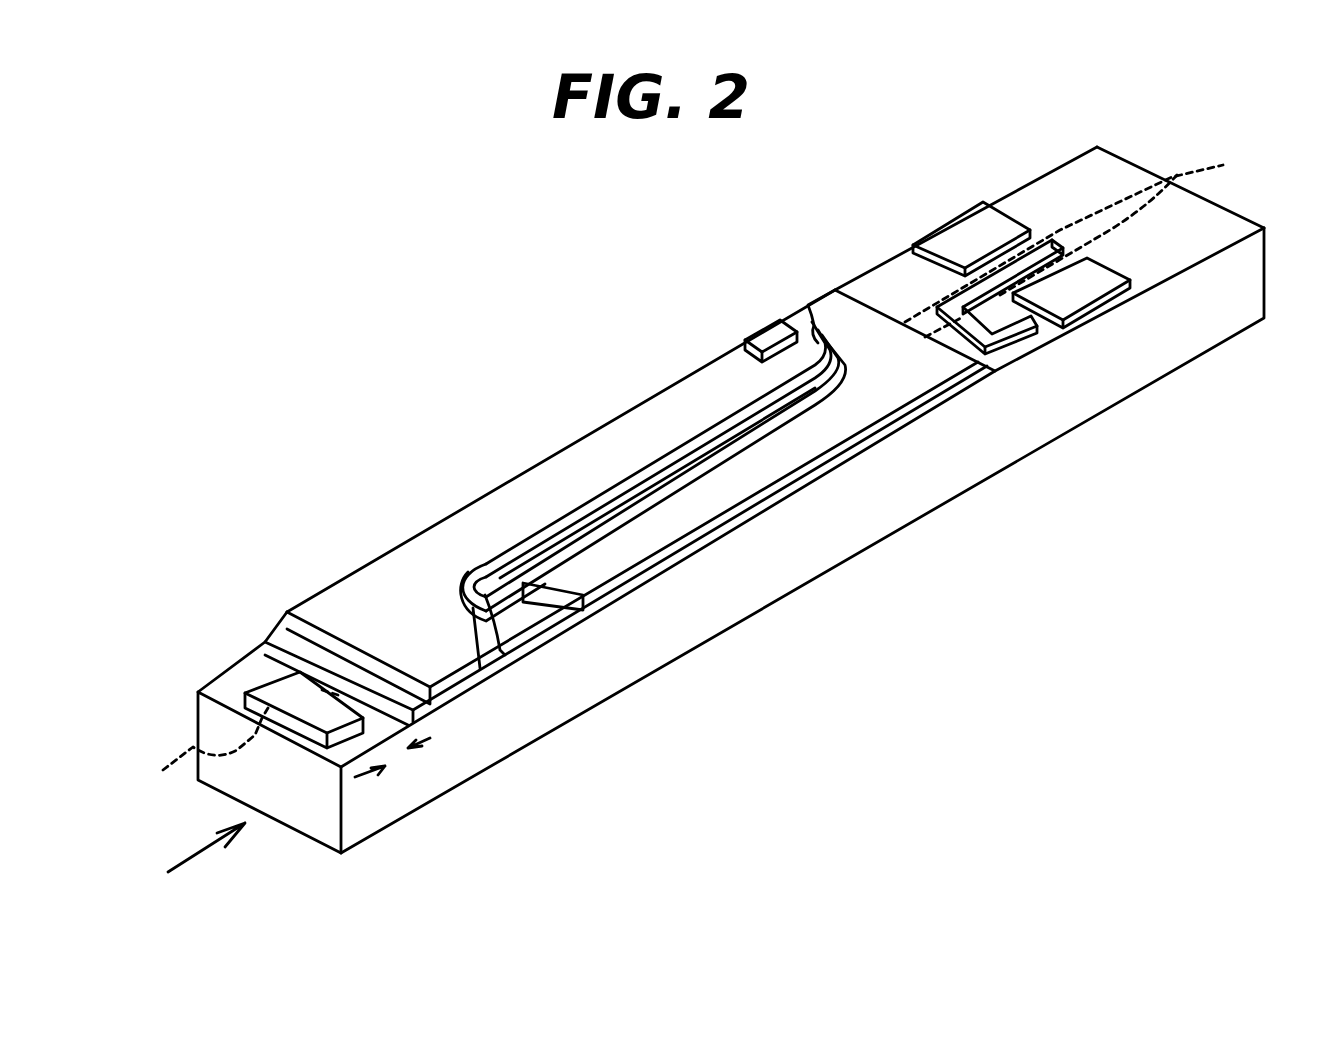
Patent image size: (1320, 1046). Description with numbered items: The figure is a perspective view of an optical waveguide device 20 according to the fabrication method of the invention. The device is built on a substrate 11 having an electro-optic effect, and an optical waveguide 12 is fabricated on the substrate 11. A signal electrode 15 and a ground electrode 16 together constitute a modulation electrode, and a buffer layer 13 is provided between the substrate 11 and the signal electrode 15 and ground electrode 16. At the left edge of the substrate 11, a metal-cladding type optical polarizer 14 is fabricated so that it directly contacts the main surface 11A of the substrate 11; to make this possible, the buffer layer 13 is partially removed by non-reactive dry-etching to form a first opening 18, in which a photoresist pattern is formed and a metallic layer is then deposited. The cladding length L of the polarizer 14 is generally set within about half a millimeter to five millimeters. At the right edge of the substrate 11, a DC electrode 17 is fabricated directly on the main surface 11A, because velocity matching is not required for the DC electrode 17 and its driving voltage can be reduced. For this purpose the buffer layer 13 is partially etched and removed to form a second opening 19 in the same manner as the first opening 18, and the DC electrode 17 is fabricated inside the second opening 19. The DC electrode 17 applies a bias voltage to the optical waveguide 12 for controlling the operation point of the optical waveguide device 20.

The substrate 11 is at (1153, 338).
The main surface 11A is at (893, 287).
The optical waveguide 12 is at (708, 470).
The buffer layer 13 is at (445, 698).
The metal-cladding type optical polarizer 14 is at (265, 687).
The signal electrode 15 is at (770, 337).
The ground electrode 16 is at (732, 378).
The DC electrode 17 is at (1017, 350).
The first opening 18 is at (220, 673).
The second opening 19 is at (1040, 177).
The optical waveguide device 20 is at (1118, 133).